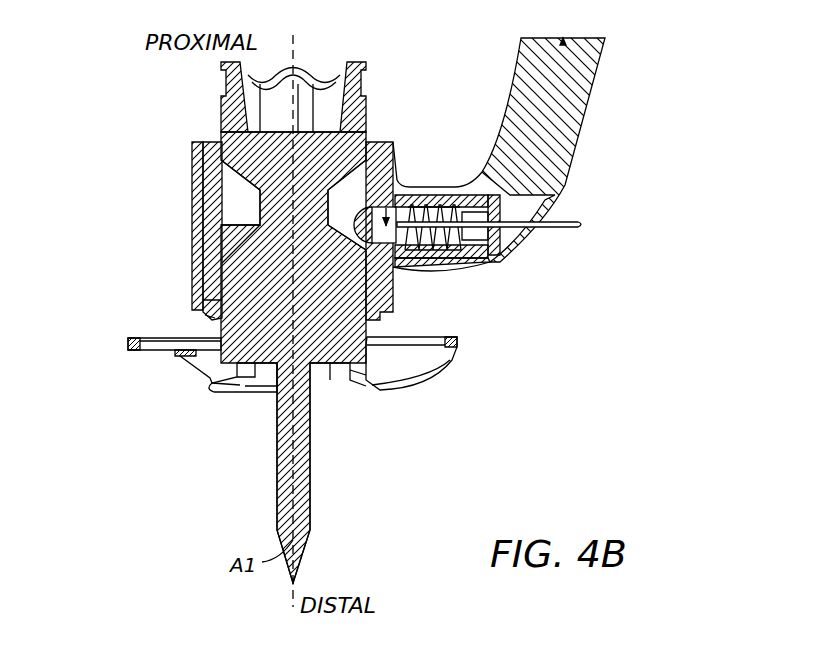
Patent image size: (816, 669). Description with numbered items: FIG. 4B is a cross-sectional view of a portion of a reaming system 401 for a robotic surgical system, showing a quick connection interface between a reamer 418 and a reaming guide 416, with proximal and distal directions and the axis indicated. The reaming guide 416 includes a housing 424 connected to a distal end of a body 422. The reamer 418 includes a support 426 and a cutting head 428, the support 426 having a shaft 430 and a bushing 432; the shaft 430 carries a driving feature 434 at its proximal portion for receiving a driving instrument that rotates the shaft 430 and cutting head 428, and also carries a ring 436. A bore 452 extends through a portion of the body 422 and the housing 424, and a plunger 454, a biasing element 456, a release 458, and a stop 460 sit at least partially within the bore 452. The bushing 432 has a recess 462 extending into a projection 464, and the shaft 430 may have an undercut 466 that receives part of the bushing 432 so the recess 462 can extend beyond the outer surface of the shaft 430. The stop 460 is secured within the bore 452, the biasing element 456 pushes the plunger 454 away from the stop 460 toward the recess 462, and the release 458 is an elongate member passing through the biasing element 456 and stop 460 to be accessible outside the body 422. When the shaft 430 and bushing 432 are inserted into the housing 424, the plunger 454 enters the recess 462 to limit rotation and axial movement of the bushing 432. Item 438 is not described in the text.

The reaming system 401 is at (140, 110).
The reaming guide 416 is at (572, 122).
The reamer 418 is at (385, 430).
The body 422 is at (578, 82).
The housing 424 is at (197, 262).
The support 426 is at (212, 330).
The cutting head 428 is at (300, 505).
The shaft 430 is at (252, 350).
The bushing 432 is at (220, 172).
The driving feature 434 is at (228, 100).
The ring 436 is at (207, 300).
The side port housing 438 is at (382, 294).
The bore 452 is at (456, 196).
The plunger 454 is at (412, 203).
The biasing element 456 is at (432, 262).
The release 458 is at (545, 233).
The stop 460 is at (482, 255).
The recess 462 is at (382, 200).
The projection 464 is at (228, 215).
The undercut 466 is at (238, 200).